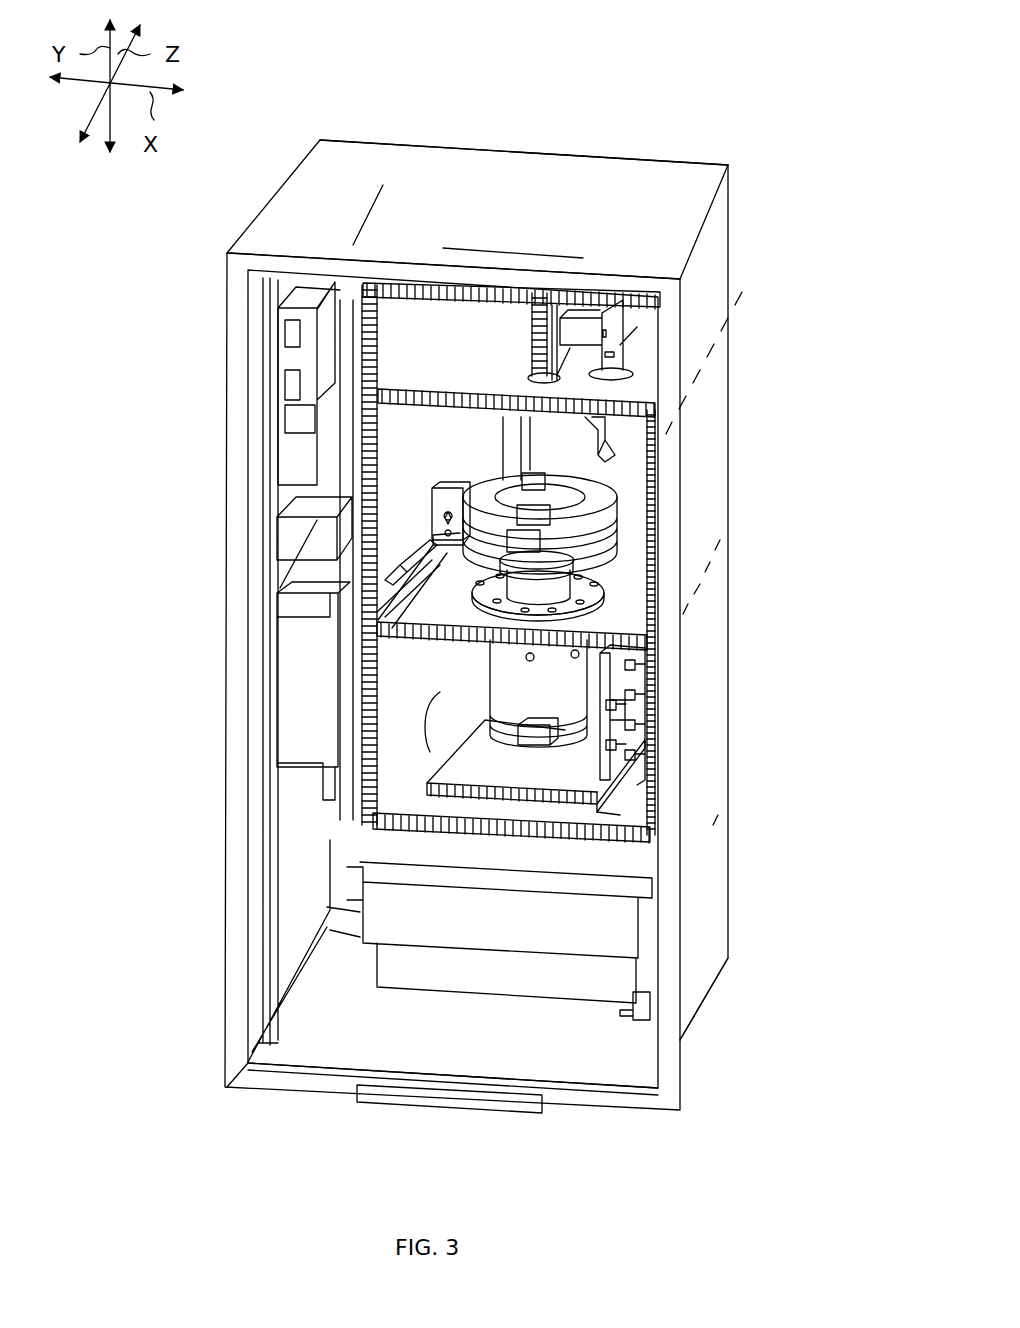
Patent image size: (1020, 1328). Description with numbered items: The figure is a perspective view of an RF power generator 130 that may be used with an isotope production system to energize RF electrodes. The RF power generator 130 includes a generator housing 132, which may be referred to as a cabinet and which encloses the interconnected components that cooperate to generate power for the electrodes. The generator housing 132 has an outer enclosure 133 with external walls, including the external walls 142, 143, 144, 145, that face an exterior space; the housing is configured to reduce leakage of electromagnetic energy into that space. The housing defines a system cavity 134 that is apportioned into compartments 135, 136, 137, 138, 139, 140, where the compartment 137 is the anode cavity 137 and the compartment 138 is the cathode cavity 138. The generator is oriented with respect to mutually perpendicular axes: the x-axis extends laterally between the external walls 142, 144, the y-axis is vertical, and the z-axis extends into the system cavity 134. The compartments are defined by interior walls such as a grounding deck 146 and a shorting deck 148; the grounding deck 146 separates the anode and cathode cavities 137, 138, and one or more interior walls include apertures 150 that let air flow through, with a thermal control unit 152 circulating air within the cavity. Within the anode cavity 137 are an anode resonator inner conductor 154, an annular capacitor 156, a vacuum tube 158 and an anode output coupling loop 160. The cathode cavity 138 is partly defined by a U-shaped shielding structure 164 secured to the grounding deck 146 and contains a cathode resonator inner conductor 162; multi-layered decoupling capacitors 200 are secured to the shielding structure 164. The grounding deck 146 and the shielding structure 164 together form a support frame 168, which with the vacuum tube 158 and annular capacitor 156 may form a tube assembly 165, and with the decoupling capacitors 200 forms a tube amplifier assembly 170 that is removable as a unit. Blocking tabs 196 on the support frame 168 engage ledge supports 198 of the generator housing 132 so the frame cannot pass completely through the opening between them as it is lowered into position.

The RF power generator 130 is at (708, 58).
The generator housing 132 is at (737, 178).
The outer enclosure 133 is at (684, 175).
The system cavity 134 is at (300, 892).
The compartment 135 is at (395, 338).
The compartment 136 is at (640, 370).
The anode cavity 137 is at (630, 487).
The cathode cavity 138 is at (565, 757).
The compartment 139 is at (622, 805).
The compartment 140 is at (575, 1030).
The external wall 142 is at (718, 208).
The external wall 143 is at (700, 1002).
The external wall 144 is at (528, 170).
The external wall 145 is at (390, 139).
The grounding deck 146 is at (625, 565).
The shorting deck 148 is at (448, 407).
The apertures 150 is at (628, 625).
The thermal control unit 152 is at (430, 1000).
The anode resonator inner conductor 154 is at (570, 457).
The annular capacitor 156 is at (490, 485).
The vacuum tube 158 is at (560, 589).
The anode output coupling loop 160 is at (580, 430).
The cathode resonator inner conductor 162 is at (575, 672).
The shielding structure 164 is at (447, 702).
The tube assembly 165 is at (590, 520).
The support frame 168 is at (418, 589).
The tube amplifier assembly 170 is at (463, 765).
The blocking tabs 196 is at (420, 501).
The ledge supports 198 is at (457, 533).
The multi-layered decoupling capacitors 200 is at (613, 740).